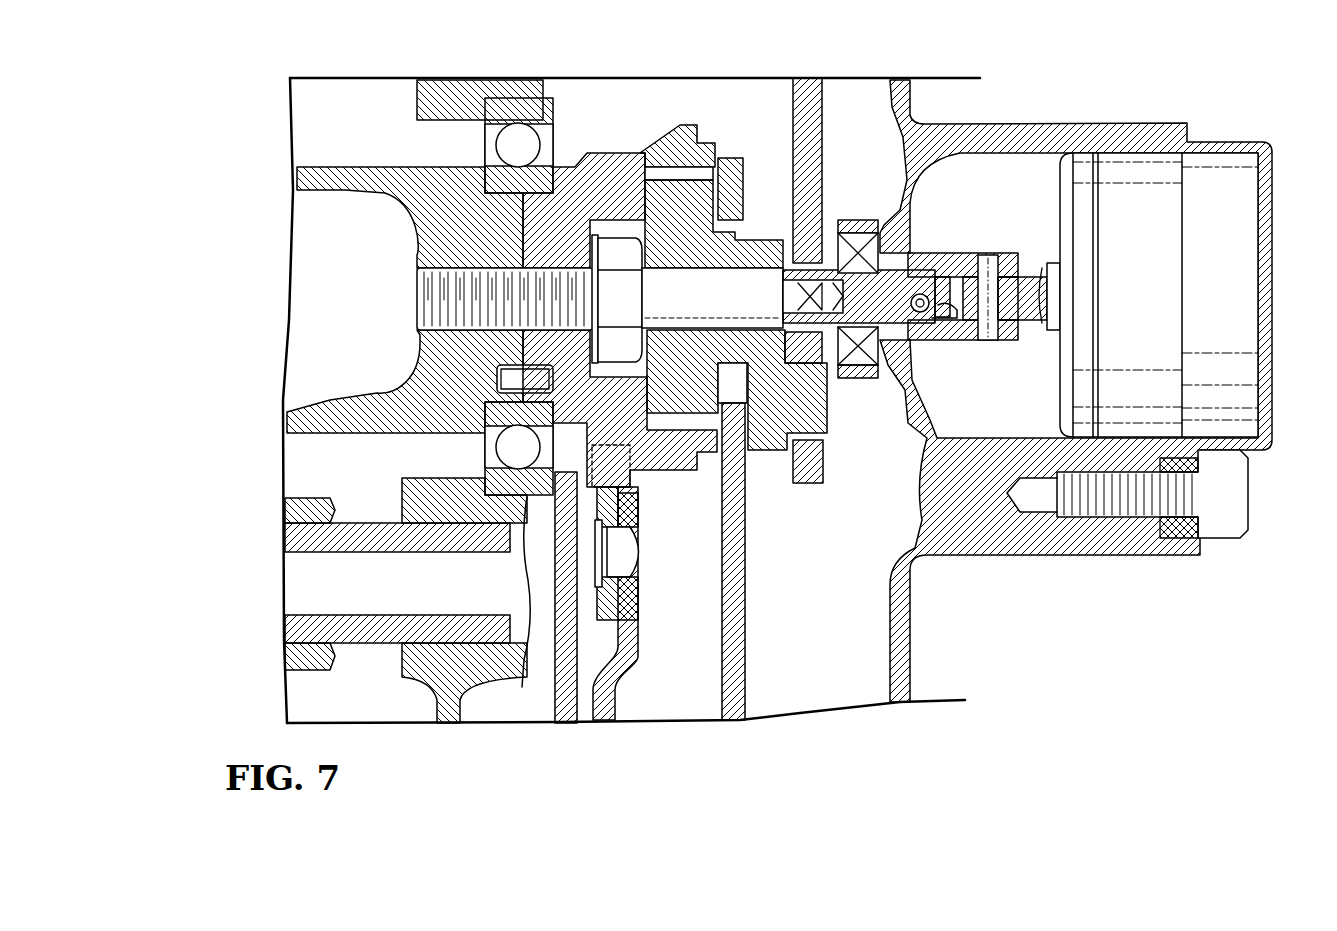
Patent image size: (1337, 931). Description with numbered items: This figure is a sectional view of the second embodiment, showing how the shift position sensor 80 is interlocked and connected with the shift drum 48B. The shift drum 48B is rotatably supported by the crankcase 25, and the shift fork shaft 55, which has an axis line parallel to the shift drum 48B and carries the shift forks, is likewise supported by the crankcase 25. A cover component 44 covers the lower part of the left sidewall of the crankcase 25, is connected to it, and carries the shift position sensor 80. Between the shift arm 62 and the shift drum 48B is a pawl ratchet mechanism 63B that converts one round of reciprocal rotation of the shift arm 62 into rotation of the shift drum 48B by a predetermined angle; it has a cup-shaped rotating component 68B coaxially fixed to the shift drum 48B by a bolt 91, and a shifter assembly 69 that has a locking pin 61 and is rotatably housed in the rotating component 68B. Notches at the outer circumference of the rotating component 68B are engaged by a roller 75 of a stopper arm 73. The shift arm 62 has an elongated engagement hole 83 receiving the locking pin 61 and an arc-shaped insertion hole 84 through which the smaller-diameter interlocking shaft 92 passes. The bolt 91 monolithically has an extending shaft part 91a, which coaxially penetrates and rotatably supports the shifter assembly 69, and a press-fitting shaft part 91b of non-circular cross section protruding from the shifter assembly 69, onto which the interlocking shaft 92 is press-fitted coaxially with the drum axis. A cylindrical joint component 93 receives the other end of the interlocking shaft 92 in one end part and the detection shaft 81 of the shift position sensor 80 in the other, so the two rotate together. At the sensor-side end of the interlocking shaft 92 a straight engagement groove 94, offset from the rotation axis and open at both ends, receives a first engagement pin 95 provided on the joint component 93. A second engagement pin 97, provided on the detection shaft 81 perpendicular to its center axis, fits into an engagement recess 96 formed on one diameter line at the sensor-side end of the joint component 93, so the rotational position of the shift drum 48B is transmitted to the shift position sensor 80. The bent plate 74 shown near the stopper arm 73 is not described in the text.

The crankcase 25 is at (463, 78).
The cover component 44 is at (905, 632).
The shift drum 48B is at (358, 173).
The shift fork shaft 55 is at (372, 625).
The locking pin 61 is at (820, 393).
The shift arm 62 is at (820, 158).
The pawl ratchet mechanism 63B is at (733, 149).
The rotating component 68B is at (637, 157).
The shifter assembly 69 is at (700, 125).
The stopper arm 73 is at (652, 617).
The bent plate 74 is at (615, 673).
The roller 75 is at (620, 503).
The shift position sensor 80 is at (1157, 301).
The detection shaft 81 is at (1027, 290).
The engagement hole 83 is at (817, 440).
The insertion hole 84 is at (783, 290).
The bolt 91 is at (428, 298).
The extending shaft part 91a is at (693, 300).
The press-fitting shaft part 91b is at (802, 305).
The interlocking shaft 92 is at (862, 280).
The joint component 93 is at (952, 253).
The engagement groove 94 is at (947, 320).
The first engagement pin 95 is at (928, 295).
The engagement recess 96 is at (1013, 335).
The second engagement pin 97 is at (990, 262).